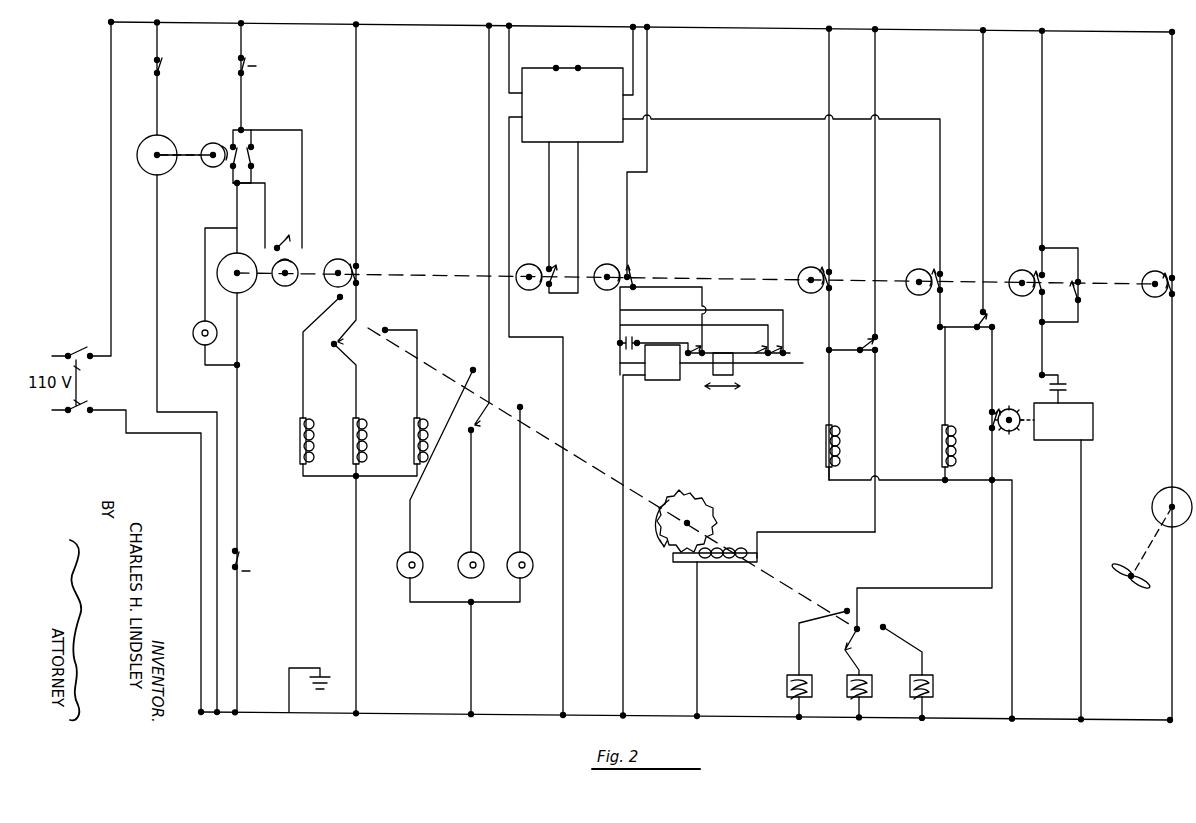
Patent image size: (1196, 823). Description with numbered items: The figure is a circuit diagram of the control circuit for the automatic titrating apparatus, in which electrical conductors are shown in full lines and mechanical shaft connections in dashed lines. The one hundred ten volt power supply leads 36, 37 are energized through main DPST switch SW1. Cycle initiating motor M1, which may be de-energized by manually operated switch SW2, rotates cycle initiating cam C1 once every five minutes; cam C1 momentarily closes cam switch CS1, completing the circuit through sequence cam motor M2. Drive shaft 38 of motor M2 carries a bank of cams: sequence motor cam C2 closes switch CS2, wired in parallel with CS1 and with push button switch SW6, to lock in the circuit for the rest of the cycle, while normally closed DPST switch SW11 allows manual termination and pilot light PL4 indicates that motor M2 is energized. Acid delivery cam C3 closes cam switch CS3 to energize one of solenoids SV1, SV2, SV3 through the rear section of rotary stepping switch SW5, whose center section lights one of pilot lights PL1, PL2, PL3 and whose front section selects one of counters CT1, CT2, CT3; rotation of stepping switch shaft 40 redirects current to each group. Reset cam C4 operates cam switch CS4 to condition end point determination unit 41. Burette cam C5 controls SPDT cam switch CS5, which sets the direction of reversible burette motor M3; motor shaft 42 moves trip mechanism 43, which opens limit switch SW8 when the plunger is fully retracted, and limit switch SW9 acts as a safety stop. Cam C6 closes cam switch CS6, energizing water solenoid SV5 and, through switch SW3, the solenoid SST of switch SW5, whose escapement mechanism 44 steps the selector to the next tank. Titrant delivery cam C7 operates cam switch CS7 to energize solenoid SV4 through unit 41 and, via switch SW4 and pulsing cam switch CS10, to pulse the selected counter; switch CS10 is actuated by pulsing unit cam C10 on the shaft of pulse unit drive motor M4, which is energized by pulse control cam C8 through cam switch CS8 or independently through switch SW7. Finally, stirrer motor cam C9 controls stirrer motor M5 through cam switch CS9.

The power supply lead 36 is at (111, 122).
The power supply lead 37 is at (201, 479).
The drive shaft 38 is at (455, 271).
The stepping switch shaft 40 is at (789, 592).
The end point determination unit 41 is at (598, 70).
The motor shaft 42 is at (800, 364).
The trip mechanism 43 is at (714, 377).
The escapement mechanism 44 is at (671, 556).
The main switch SW1 is at (75, 351).
The manually operated switch SW2 is at (159, 64).
The switch SW3 is at (860, 348).
The switch SW4 is at (975, 326).
The rotary stepping switch SW5 is at (683, 493).
The push button switch SW6 is at (261, 159).
The switch SW7 is at (1084, 286).
The limit switch SW8 is at (700, 350).
The limit switch SW9 is at (766, 352).
The switch SW11 is at (268, 317).
The cam switch CS1 is at (235, 140).
The cam switch CS2 is at (283, 244).
The cam switch CS3 is at (355, 268).
The cam switch CS4 is at (550, 268).
The cam switch CS5 is at (630, 270).
The cam switch CS6 is at (831, 270).
The cam switch CS7 is at (944, 270).
The pulse control cam switch CS8 is at (1036, 268).
The cam switch CS9 is at (1170, 272).
The pulsing unit cam switch CS10 is at (987, 410).
The cycle initiating cam C1 is at (212, 168).
The sequence motor cam C2 is at (283, 286).
The acid delivery cam C3 is at (333, 287).
The reset cam C4 is at (527, 291).
The burette cam C5 is at (605, 291).
The cam C6 is at (808, 292).
The titrant delivery cam C7 is at (912, 292).
The pulse control cam C8 is at (1019, 295).
The stirrer motor cam C9 is at (1153, 296).
The pulsing unit cam C10 is at (1010, 432).
The cycle initiating motor M1 is at (177, 423).
The sequence cam motor M2 is at (237, 482).
The reversible burette motor M3 is at (650, 530).
The pulse unit drive motor M4 is at (1063, 520).
The stirrer motor M5 is at (1151, 538).
The pilot light PL1 is at (398, 561).
The pilot light PL2 is at (460, 561).
The pilot light PL3 is at (512, 559).
The pilot light PL4 is at (200, 325).
The solenoid SV1 is at (302, 437).
The solenoid SV2 is at (353, 432).
The solenoid SV3 is at (413, 432).
The solenoid SV4 is at (938, 441).
The solenoid SV5 is at (823, 441).
The counter CT1 is at (791, 681).
The counter CT2 is at (852, 681).
The counter CT3 is at (914, 681).
The solenoid of stepping switch SST is at (726, 565).